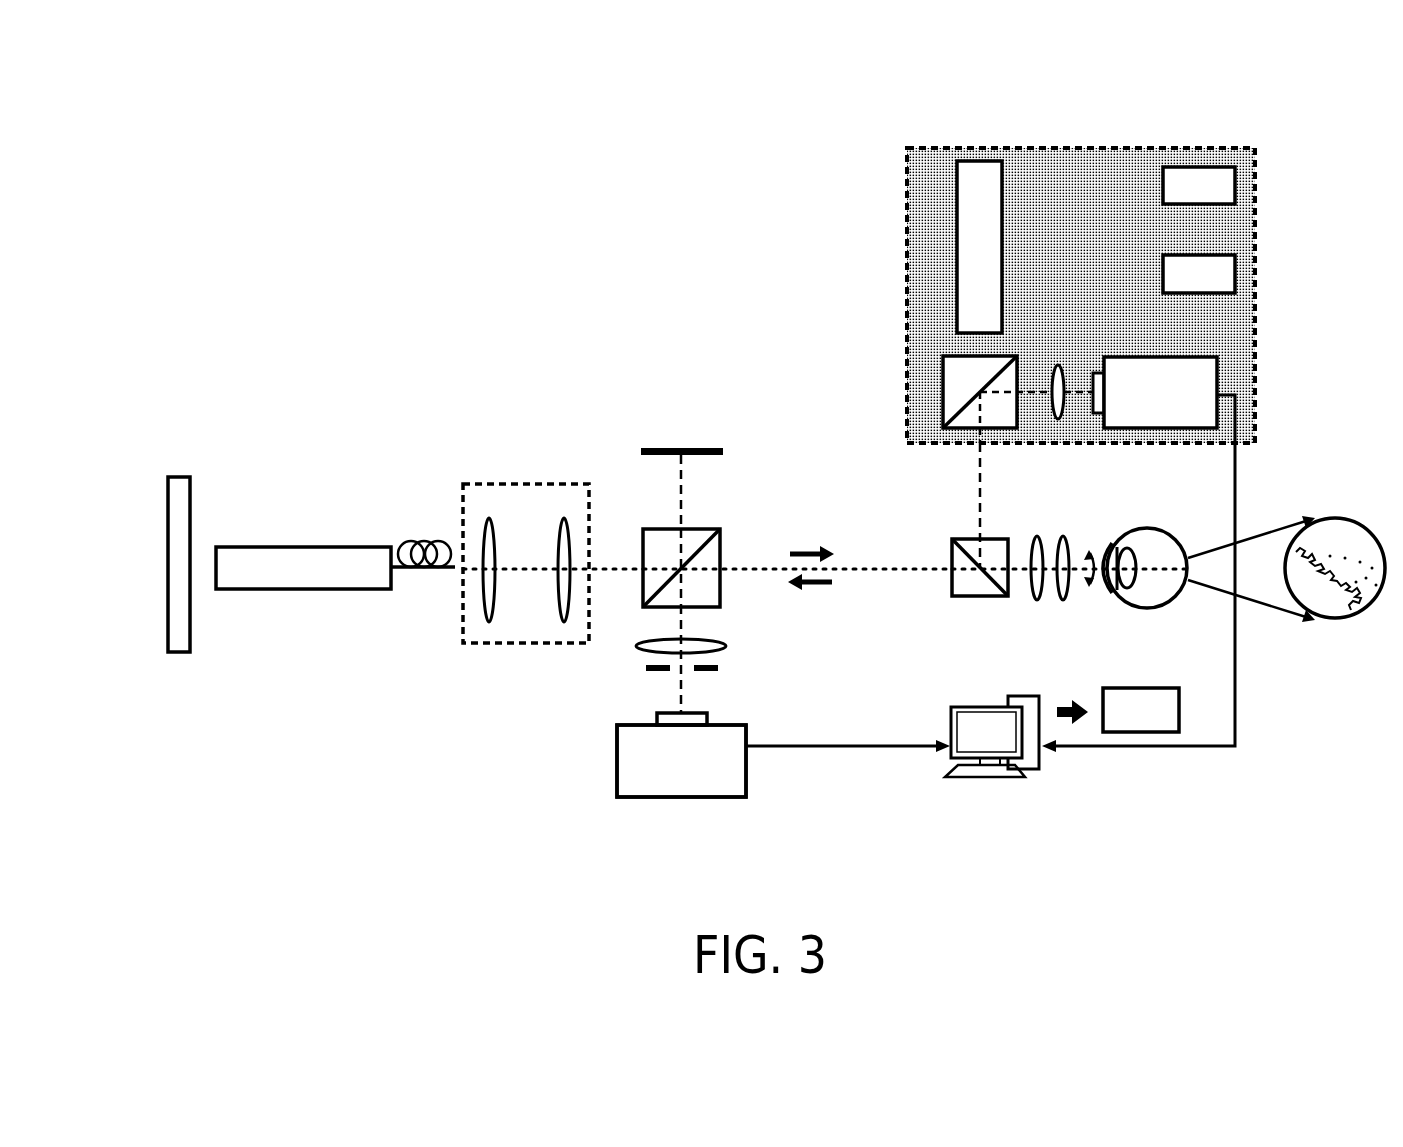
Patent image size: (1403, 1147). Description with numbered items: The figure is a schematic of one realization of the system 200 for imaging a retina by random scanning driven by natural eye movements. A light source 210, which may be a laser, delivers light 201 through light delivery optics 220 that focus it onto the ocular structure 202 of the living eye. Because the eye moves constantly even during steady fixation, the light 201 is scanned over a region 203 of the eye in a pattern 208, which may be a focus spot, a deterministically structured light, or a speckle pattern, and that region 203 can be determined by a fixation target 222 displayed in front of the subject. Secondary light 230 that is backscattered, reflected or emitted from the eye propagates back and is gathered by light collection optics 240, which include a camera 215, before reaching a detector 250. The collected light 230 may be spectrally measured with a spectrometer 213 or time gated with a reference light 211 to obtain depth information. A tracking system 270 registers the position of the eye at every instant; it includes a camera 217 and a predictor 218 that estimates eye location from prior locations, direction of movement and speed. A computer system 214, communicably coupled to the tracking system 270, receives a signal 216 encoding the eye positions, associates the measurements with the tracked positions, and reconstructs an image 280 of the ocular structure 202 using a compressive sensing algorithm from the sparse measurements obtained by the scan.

The system 200 is at (1286, 148).
The light 201 is at (630, 570).
The ocular structure 202 is at (1178, 544).
The region 203 is at (1180, 555).
The pattern 208 is at (1358, 603).
The light source 210 is at (323, 547).
The reference light 211 is at (957, 203).
The spectrometer 213 is at (1216, 287).
The computer system 214 is at (935, 762).
The camera 215 is at (617, 780).
The signal 216 is at (1232, 748).
The camera 217 is at (1178, 419).
The predictor 218 is at (1216, 196).
The light delivery optics 220 is at (603, 445).
The fixation target 222 is at (168, 605).
The secondary light 230 is at (925, 578).
The light collection optics 240 is at (712, 818).
The detector 250 is at (1063, 340).
The tracking system 270 is at (1112, 269).
The image 280 is at (1158, 724).